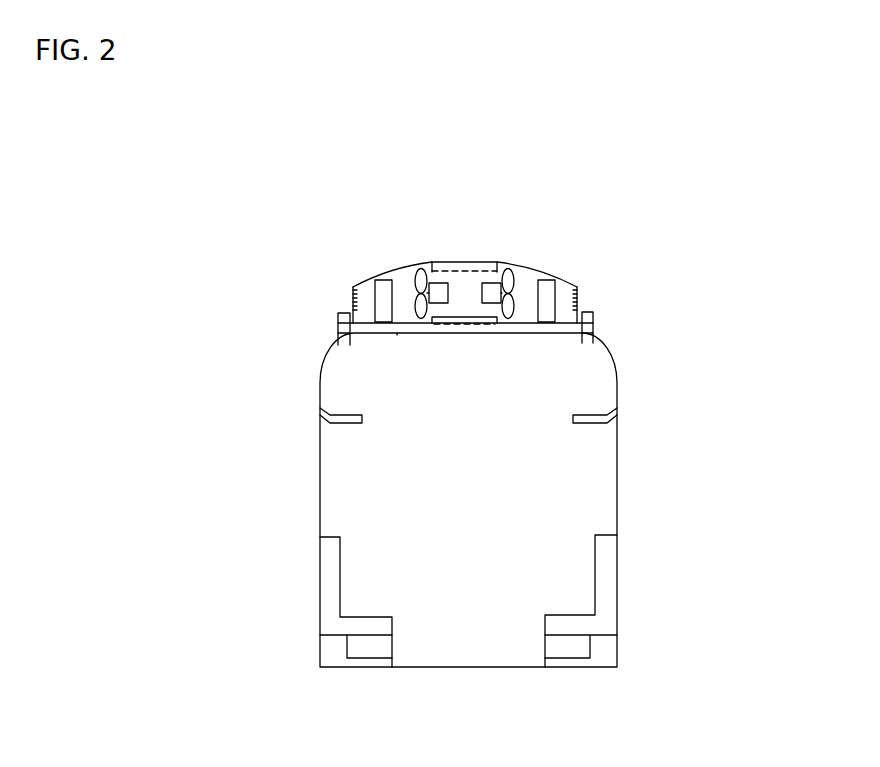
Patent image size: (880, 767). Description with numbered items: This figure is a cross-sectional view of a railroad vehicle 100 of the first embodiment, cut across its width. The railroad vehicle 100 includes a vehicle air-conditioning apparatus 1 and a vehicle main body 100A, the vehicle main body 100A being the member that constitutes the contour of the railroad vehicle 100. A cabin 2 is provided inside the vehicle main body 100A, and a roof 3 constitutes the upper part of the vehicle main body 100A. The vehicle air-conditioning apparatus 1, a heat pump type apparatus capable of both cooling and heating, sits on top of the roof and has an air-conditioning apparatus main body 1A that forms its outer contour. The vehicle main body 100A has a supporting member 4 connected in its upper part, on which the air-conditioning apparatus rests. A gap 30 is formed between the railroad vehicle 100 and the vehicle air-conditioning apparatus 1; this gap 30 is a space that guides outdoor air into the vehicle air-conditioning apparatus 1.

The railroad vehicle 100 is at (585, 255).
The vehicle air-conditioning apparatus 1 is at (545, 273).
The air-conditioning apparatus main body 1A is at (523, 266).
The cabin 2 is at (588, 377).
The roof 3 is at (397, 333).
The supporting member 4 is at (594, 313).
The gap 30 is at (577, 327).
The vehicle main body 100A is at (613, 397).